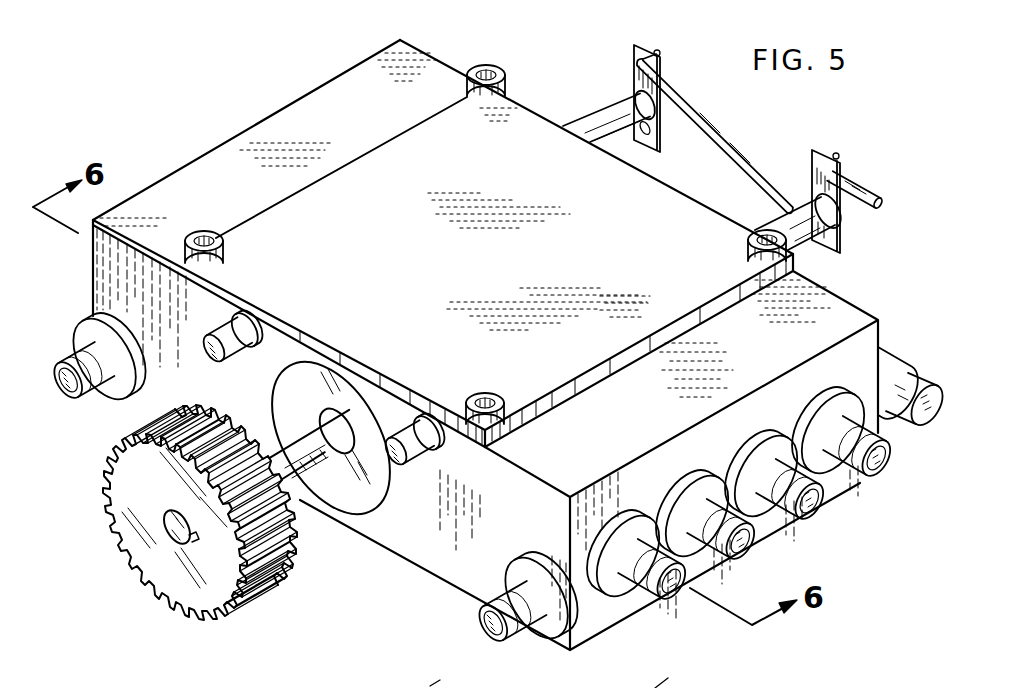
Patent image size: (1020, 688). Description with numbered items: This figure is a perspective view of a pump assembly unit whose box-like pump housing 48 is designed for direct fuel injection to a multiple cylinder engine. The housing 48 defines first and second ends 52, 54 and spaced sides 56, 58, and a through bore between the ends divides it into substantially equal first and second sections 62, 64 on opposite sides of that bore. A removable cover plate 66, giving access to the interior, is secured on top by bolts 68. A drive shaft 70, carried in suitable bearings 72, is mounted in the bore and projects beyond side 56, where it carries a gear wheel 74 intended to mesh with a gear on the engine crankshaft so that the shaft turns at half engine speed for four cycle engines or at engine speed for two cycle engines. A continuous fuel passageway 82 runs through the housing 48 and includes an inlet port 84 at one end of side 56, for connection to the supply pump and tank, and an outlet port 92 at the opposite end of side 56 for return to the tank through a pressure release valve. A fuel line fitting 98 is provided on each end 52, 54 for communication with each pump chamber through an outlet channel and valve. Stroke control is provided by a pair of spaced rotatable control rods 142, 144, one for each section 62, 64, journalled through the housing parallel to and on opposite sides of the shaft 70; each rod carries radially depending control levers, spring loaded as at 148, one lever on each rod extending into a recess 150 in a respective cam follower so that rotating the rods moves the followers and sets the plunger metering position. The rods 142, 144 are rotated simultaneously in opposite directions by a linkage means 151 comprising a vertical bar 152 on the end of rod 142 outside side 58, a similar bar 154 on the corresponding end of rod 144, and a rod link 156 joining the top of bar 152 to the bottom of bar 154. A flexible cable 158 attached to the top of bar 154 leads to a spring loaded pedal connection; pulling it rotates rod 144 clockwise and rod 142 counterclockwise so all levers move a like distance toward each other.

The pump housing 48 is at (322, 78).
The first end 52 is at (603, 610).
The second end 54 is at (167, 177).
The side 56 is at (425, 542).
The side 58 is at (540, 107).
The first section 62 is at (817, 327).
The second section 64 is at (297, 140).
The cover plate 66 is at (495, 265).
The bolts 68 is at (487, 67).
The drive shaft 70 is at (303, 467).
The bearings 72 is at (374, 473).
The gear wheel 74 is at (180, 577).
The fuel passageway 82 is at (893, 387).
The inlet port 84 is at (483, 640).
The outlet port 92 is at (70, 397).
The fuel line fitting 98 is at (672, 592).
The control rod 142 is at (243, 328).
The control rod 144 is at (420, 430).
The spring loading 148 is at (428, 682).
The recess 150 is at (681, 682).
The linkage means 151 is at (801, 140).
The vertical bar 152 is at (663, 65).
The bar 154 is at (843, 167).
The rod link 156 is at (745, 160).
The flexible cable 158 is at (887, 203).